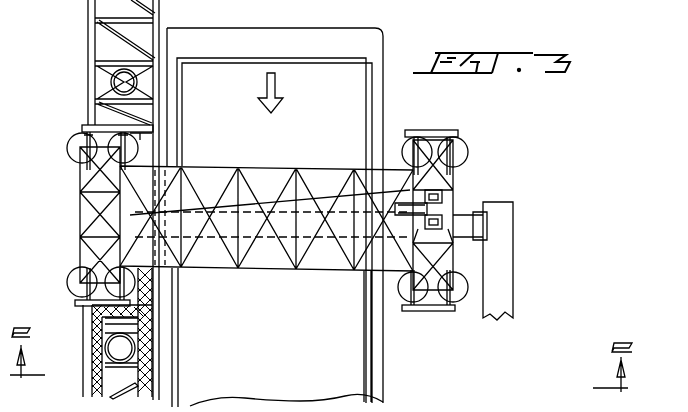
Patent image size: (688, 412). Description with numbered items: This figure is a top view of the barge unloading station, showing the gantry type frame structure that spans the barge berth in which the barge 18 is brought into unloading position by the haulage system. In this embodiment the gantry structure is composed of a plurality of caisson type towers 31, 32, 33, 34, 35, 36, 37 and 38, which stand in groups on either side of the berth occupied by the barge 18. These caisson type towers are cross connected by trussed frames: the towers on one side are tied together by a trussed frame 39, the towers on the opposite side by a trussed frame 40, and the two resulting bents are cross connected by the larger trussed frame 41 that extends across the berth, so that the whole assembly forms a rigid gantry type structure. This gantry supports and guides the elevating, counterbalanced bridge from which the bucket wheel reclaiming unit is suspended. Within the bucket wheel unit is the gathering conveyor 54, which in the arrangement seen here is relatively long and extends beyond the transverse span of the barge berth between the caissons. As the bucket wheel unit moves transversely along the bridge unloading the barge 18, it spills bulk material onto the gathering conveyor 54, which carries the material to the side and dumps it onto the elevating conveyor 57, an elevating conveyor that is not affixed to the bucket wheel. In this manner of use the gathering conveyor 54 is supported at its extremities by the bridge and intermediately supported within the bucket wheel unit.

The barge 18 is at (272, 356).
The caisson tower 31 is at (70, 153).
The caisson tower 32 is at (130, 142).
The caisson tower 33 is at (70, 275).
The caisson tower 34 is at (120, 268).
The caisson tower 35 is at (402, 290).
The caisson tower 36 is at (453, 287).
The caisson tower 37 is at (460, 147).
The caisson tower 38 is at (417, 145).
The trussed frame 39 is at (80, 208).
The trussed frame 40 is at (452, 200).
The trussed frame 41 is at (268, 167).
The gathering conveyor 54 is at (307, 228).
The elevating conveyor 57 is at (503, 278).